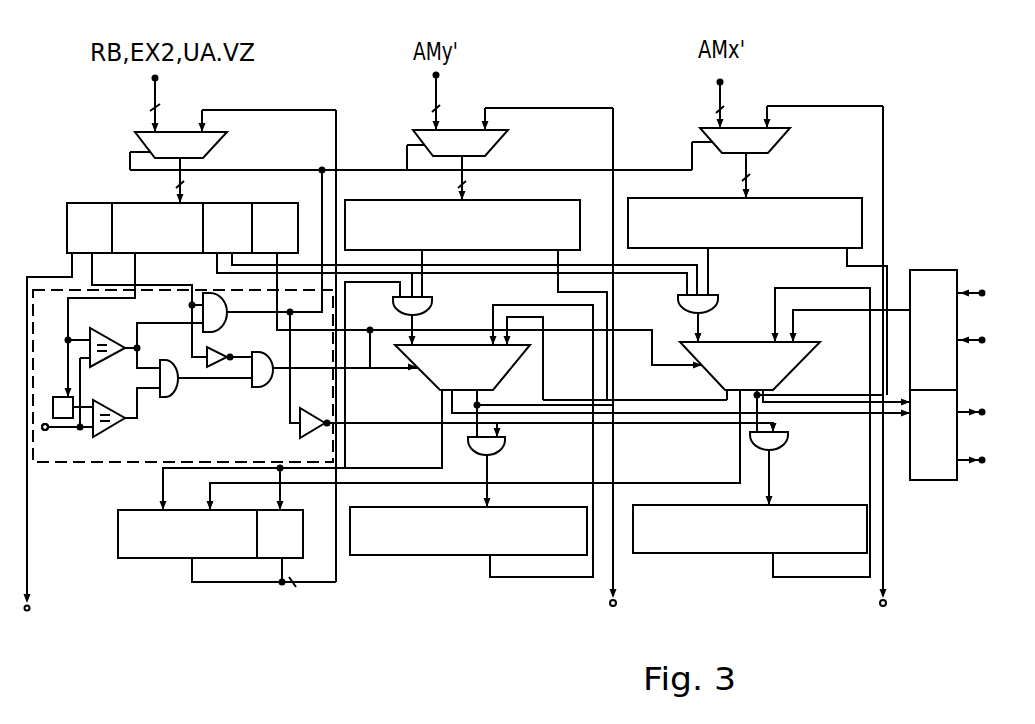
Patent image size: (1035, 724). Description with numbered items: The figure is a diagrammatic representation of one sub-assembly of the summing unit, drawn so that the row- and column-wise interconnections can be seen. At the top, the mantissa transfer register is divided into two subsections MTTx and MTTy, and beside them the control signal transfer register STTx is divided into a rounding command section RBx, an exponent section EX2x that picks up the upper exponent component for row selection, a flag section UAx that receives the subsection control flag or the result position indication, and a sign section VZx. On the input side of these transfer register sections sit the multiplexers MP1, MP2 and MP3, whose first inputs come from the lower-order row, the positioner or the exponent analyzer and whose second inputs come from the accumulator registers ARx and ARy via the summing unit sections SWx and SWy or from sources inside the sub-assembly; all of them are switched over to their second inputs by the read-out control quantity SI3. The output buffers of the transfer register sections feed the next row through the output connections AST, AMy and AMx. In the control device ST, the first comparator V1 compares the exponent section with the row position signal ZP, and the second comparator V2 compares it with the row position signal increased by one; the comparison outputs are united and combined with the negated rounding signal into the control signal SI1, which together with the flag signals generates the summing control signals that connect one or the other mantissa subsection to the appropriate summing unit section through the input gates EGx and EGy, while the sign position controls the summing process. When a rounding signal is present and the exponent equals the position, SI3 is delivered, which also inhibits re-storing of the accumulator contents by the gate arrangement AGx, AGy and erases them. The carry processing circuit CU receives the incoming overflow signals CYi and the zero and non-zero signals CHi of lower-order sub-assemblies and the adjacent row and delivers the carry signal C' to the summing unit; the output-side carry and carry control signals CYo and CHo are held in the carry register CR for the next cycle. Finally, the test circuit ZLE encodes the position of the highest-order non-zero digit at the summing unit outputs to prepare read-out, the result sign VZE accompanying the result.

The multiplexer MP3 is at (233, 140).
The multiplexer MP2 is at (510, 137).
The multiplexer MP1 is at (787, 140).
The control signal transfer register STTx is at (70, 215).
The rounding command section RBx is at (89, 228).
The exponent section EX2x is at (157, 228).
The flag section UAx is at (227, 228).
The sign section VZx is at (275, 228).
The mantissa transfer register subsection MTTy is at (462, 225).
The mantissa transfer register subsection MTTx is at (745, 223).
The control device ST is at (212, 434).
The first comparator V1 is at (107, 335).
The second comparator V2 is at (110, 406).
The row position signal ZP is at (76, 432).
The read-out control quantity SI3 is at (228, 310).
The control signal SI1 is at (349, 364).
The input gate EGy is at (438, 303).
The input gate EGx is at (722, 303).
The summing unit section SWy is at (462, 367).
The summing unit section SWx is at (750, 366).
The carry signal C' is at (851, 324).
The gate arrangement AGy is at (508, 447).
The gate arrangement AGx is at (791, 444).
The carry processing circuit CU is at (933, 330).
The carry register CR is at (933, 435).
The incoming overflow signals CYi is at (989, 292).
The incoming zero and non-zero signals CHi is at (992, 340).
The output-side carry signals CYo is at (993, 412).
The output-side carry control signals CHo is at (993, 460).
The test circuit ZLE is at (210, 534).
The result sign VZE is at (280, 534).
The accumulator register ARy is at (468, 531).
The accumulator register ARx is at (750, 529).
The output connection AST is at (40, 460).
The output connection AMy is at (614, 374).
The output connection AMx is at (888, 372).